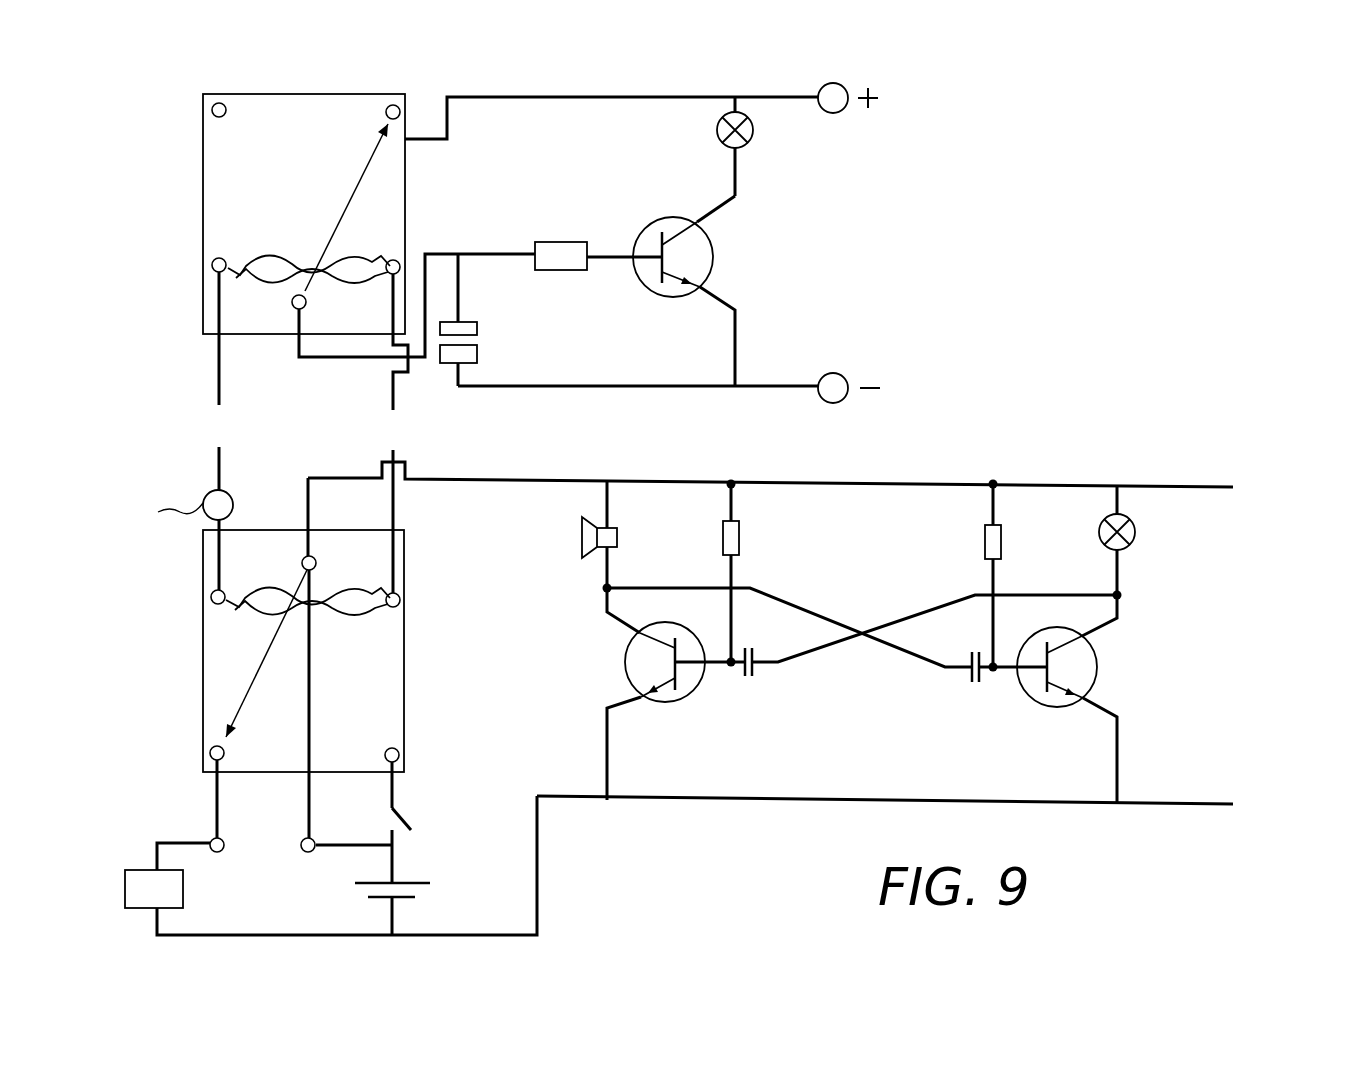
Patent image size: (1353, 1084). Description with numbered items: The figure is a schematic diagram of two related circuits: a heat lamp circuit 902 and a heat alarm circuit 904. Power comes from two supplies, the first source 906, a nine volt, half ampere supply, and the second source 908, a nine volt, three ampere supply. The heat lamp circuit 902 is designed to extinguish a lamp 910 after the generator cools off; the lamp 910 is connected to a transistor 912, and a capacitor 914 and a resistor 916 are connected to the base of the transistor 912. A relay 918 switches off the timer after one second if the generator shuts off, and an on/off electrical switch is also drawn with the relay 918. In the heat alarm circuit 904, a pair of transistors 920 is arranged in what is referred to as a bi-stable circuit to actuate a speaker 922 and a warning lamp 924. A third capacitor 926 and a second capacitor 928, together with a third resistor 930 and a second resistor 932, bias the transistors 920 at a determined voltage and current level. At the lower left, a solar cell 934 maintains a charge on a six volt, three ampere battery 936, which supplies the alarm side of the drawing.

The heat lamp circuit 902 is at (968, 236).
The heat alarm circuit 904 is at (1196, 634).
The source 1 906 is at (300, 665).
The source 2 908 is at (856, 259).
The lamp L1 910 is at (758, 146).
The transistor 912 is at (710, 242).
The capacitor C1 914 is at (492, 341).
The resistor R1 916 is at (561, 271).
The relay 1 918 is at (305, 236).
The transistors 920 is at (695, 690).
The speaker 922 is at (569, 529).
The warning lamp 924 is at (1140, 541).
The capacitor C3 926 is at (764, 684).
The capacitor C2 928 is at (976, 686).
The resistor R3 930 is at (754, 529).
The resistor R2 932 is at (1015, 533).
The solar cell SC1 934 is at (140, 870).
The battery 936 is at (420, 882).